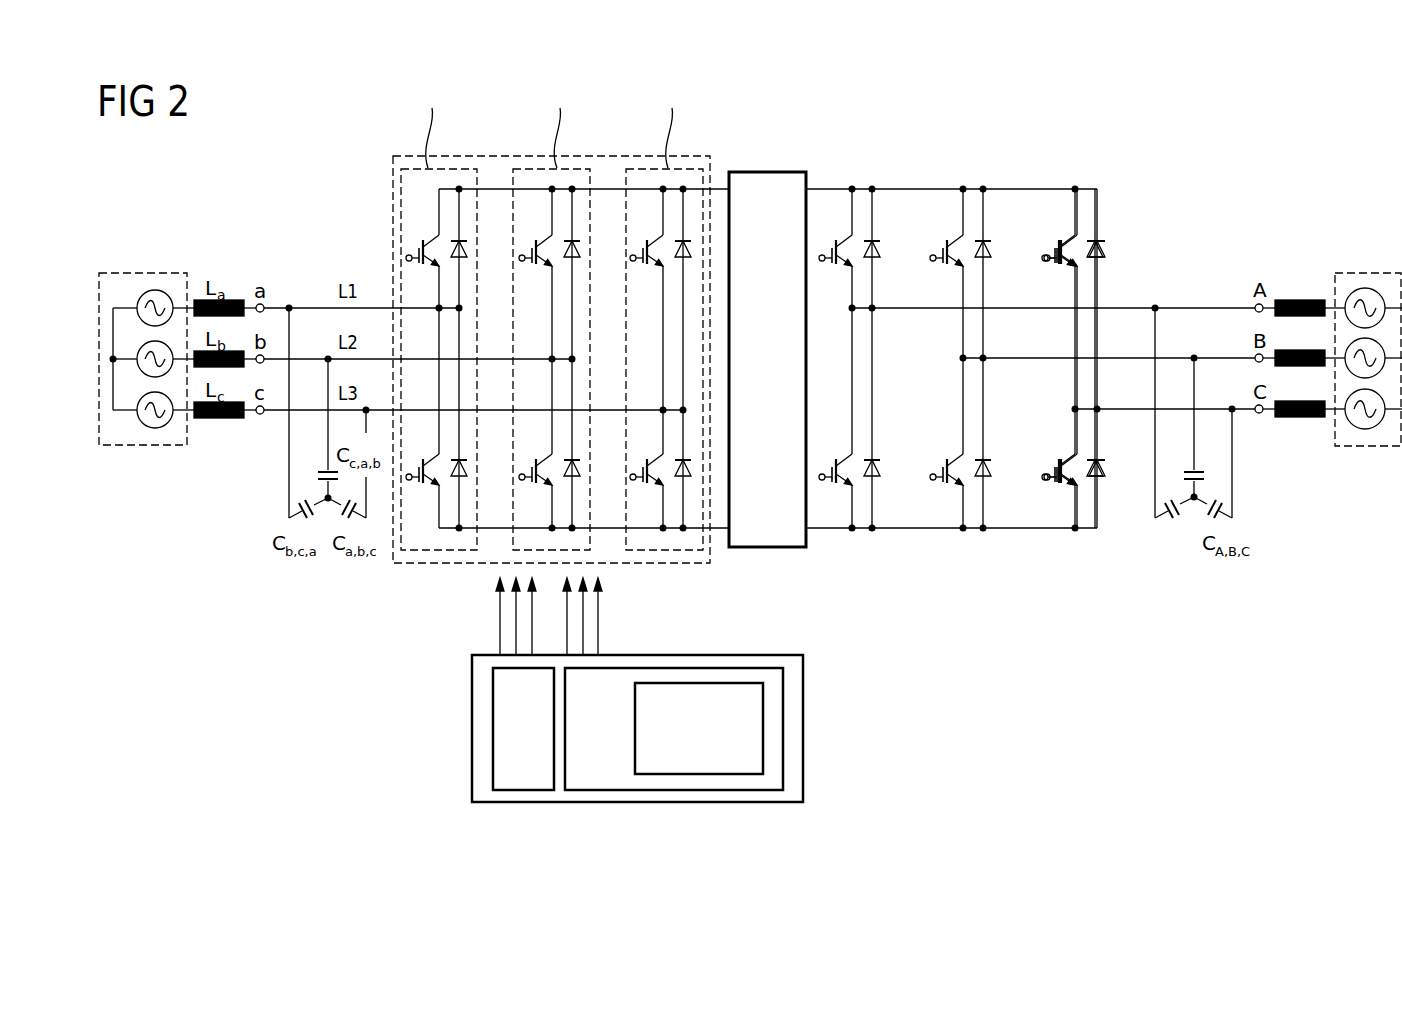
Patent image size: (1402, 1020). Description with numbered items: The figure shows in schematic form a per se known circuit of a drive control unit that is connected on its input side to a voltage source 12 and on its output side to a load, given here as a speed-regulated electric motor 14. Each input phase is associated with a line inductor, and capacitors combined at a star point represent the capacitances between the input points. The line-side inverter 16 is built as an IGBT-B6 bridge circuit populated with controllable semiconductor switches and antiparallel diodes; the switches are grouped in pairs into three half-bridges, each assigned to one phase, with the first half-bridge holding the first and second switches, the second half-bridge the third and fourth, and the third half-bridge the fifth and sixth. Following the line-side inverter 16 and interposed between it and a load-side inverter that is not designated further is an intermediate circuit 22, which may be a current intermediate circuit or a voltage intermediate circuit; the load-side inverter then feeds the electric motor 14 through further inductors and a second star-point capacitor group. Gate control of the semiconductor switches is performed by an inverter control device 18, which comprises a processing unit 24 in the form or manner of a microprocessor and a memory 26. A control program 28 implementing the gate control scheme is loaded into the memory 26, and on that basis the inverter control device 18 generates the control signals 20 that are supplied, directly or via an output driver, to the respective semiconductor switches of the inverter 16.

The voltage source 12 is at (139, 272).
The speed-regulated electric motor 14 is at (1372, 271).
The inverter 16 is at (493, 155).
The inverter control device 18 is at (600, 728).
The control signal 20 is at (499, 621).
The intermediate circuit 22 is at (763, 171).
The processing unit 24 is at (536, 709).
The memory 26 is at (601, 709).
The control program 28 is at (713, 744).